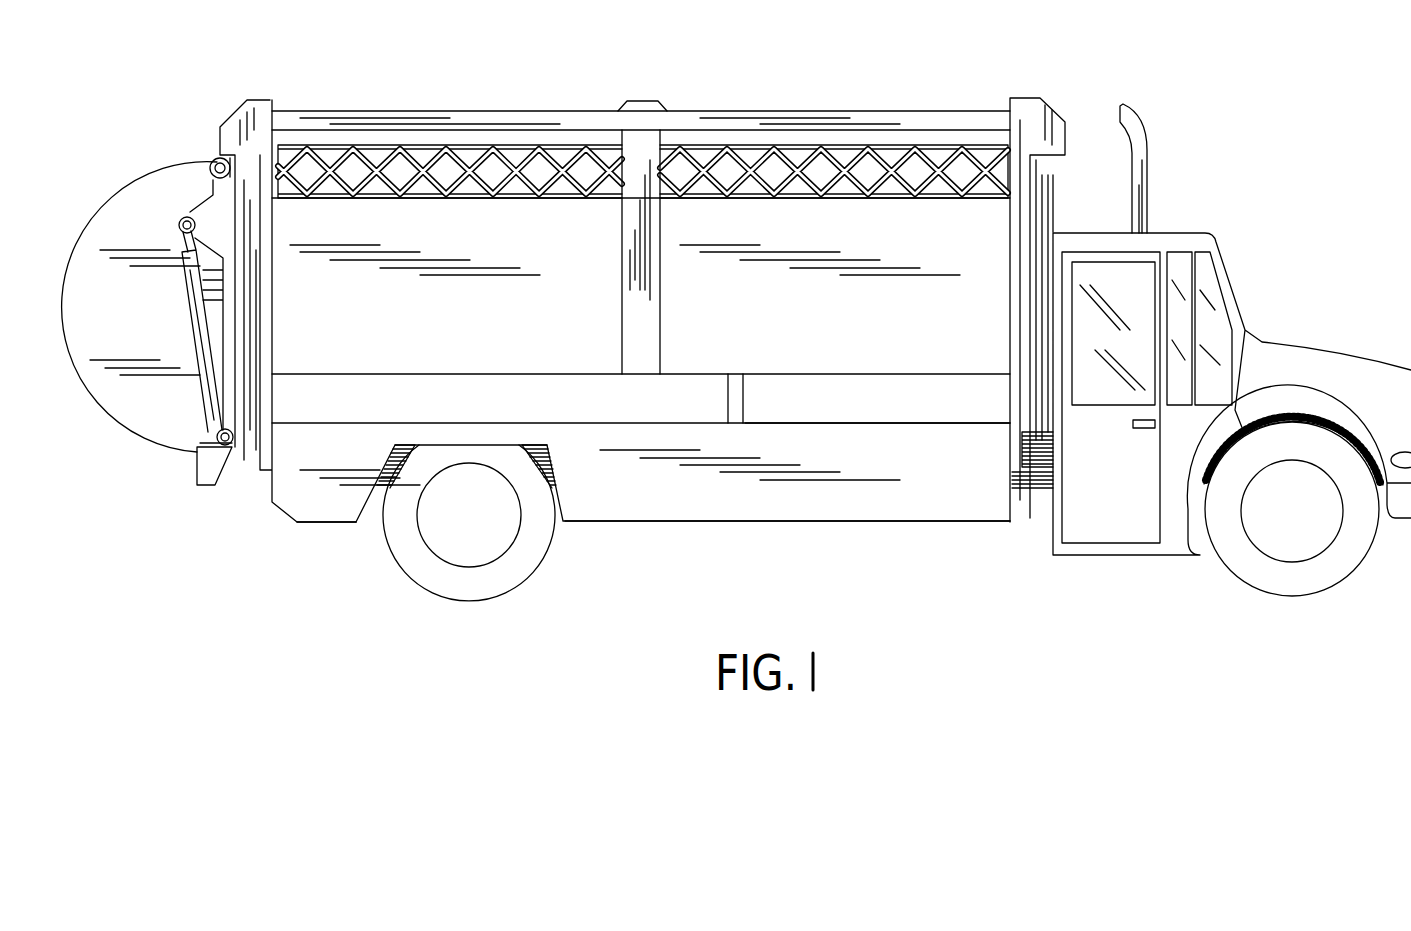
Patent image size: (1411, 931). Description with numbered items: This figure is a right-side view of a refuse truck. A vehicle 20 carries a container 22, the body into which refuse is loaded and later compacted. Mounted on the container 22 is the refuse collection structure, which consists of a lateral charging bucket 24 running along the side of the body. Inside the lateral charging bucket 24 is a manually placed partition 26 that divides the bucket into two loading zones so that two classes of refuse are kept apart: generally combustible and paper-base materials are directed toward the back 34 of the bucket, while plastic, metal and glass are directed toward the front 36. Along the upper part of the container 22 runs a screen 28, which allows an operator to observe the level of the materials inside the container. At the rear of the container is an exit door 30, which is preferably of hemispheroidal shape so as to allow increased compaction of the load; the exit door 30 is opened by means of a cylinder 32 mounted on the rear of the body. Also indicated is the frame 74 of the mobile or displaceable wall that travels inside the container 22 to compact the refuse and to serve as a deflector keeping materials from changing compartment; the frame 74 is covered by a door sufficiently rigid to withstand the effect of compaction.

The vehicle 20 is at (1177, 262).
The container 22 is at (474, 232).
The lateral charging bucket 24 is at (985, 498).
The partition 26 is at (735, 400).
The screen 28 is at (848, 168).
The exit door 30 is at (153, 208).
The cylinder 32 is at (205, 343).
The back 34 is at (363, 400).
The front 36 is at (890, 400).
The frame 74 is at (735, 192).